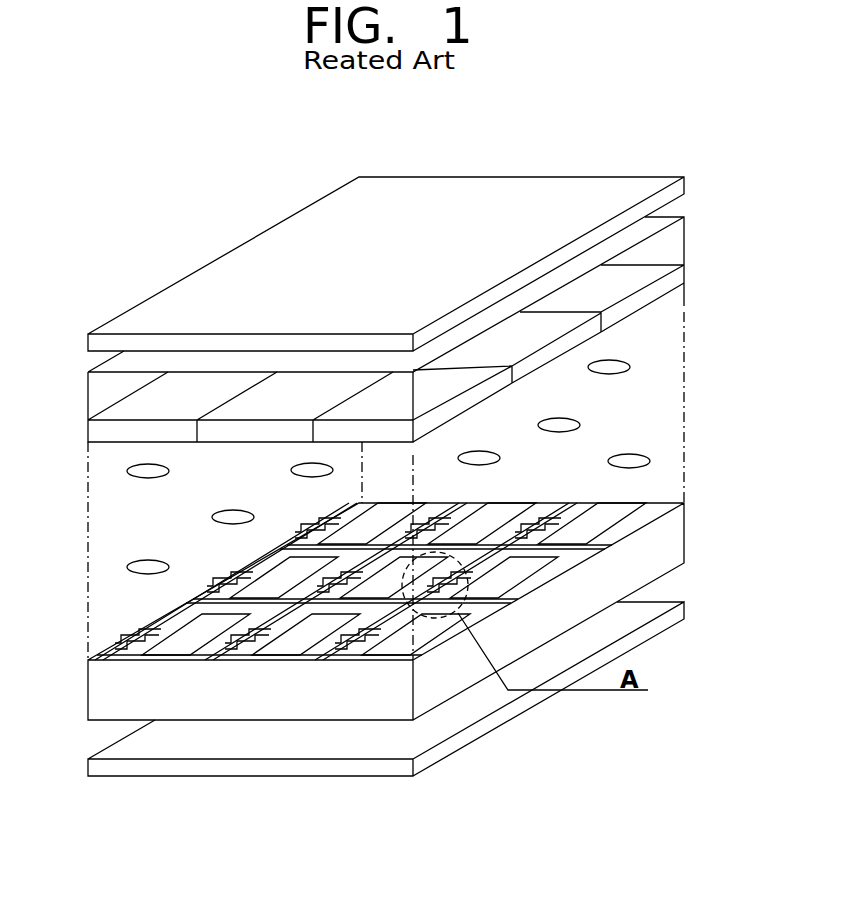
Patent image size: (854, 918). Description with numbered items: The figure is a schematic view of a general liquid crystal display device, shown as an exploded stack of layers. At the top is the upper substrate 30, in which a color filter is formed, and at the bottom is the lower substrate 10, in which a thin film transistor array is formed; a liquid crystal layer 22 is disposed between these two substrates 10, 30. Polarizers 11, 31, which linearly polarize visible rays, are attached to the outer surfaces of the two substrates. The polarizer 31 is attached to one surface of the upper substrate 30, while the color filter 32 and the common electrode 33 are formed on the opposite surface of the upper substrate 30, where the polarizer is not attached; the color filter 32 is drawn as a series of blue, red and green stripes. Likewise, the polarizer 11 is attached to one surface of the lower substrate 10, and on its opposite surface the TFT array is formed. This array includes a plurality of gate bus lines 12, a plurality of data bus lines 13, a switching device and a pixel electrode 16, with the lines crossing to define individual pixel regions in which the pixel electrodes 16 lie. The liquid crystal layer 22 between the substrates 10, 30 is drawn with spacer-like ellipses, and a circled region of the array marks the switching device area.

The polarizer 31 is at (88, 343).
The color filter 32 is at (684, 247).
The common electrode 33 is at (645, 304).
The upper substrate 30 is at (87, 373).
The liquid crystal layer 22 is at (97, 534).
The pixel electrode 16 is at (622, 508).
The gate bus lines 12 is at (622, 535).
The data bus lines 13 is at (308, 660).
The lower substrate 10 is at (87, 660).
The polarizer 11 is at (88, 763).